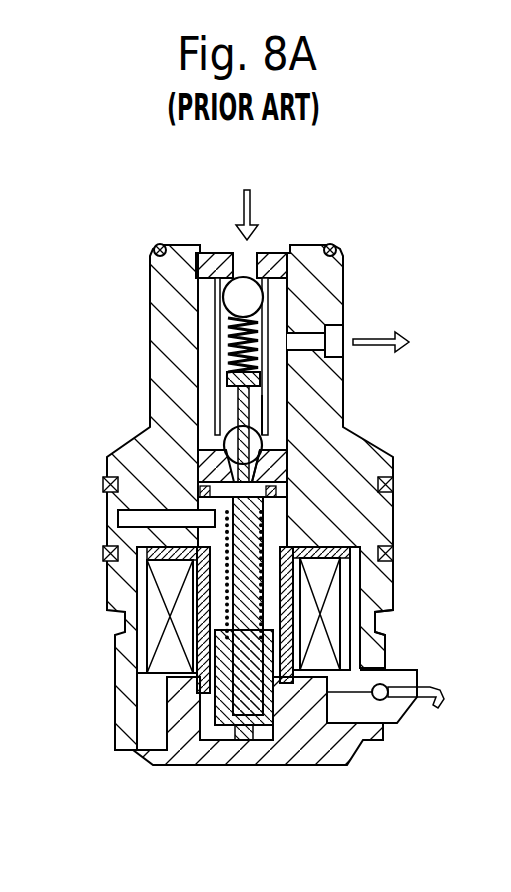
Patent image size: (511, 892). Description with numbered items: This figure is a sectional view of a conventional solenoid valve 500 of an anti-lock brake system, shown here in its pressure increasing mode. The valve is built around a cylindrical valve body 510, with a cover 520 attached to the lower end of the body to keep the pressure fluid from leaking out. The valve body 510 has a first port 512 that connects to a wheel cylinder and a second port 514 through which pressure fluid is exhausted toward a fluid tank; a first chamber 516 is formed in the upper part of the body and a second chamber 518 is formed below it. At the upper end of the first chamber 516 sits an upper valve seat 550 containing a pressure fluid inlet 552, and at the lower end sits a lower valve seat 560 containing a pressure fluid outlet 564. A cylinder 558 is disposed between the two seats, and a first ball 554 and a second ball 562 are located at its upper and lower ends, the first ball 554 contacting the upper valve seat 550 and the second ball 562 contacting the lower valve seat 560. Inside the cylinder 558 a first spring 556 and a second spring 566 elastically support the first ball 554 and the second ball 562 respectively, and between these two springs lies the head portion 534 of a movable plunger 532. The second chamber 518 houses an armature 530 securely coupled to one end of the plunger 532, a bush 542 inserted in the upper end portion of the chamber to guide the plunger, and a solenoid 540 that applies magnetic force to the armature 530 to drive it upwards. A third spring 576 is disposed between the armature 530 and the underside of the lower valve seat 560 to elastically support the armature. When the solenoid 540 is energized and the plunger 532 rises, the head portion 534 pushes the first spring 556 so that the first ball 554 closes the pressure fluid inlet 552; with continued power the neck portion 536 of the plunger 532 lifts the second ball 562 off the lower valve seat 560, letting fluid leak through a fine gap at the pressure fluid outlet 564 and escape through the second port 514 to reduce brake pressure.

The solenoid valve 500 is at (208, 188).
The cylindrical valve body 510 is at (333, 281).
The first port 512 is at (317, 340).
The second port 514 is at (135, 517).
The first chamber 516 is at (333, 258).
The second chamber 518 is at (373, 625).
The cover 520 is at (170, 755).
The armature 530 is at (262, 717).
The movable plunger 532 is at (197, 650).
The head portion 534 is at (236, 378).
The neck portion 536 is at (262, 470).
The solenoid 540 is at (163, 657).
The bush 542 is at (238, 604).
The upper valve seat 550 is at (273, 260).
The pressure fluid inlet 552 is at (245, 262).
The first ball 554 is at (233, 297).
The first spring 556 is at (215, 327).
The cylinder 558 is at (227, 355).
The lower valve seat 560 is at (197, 457).
The second ball 562 is at (225, 442).
The pressure fluid outlet 564 is at (278, 460).
The second spring 566 is at (268, 402).
The third spring 576 is at (215, 590).